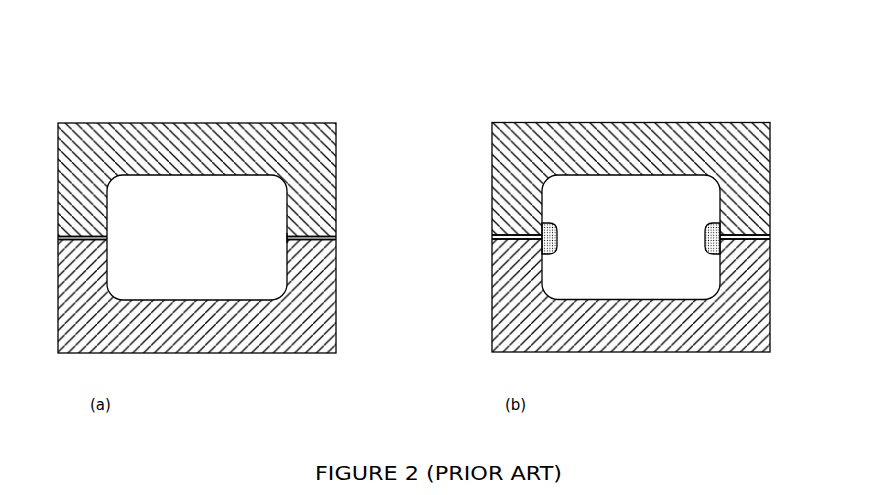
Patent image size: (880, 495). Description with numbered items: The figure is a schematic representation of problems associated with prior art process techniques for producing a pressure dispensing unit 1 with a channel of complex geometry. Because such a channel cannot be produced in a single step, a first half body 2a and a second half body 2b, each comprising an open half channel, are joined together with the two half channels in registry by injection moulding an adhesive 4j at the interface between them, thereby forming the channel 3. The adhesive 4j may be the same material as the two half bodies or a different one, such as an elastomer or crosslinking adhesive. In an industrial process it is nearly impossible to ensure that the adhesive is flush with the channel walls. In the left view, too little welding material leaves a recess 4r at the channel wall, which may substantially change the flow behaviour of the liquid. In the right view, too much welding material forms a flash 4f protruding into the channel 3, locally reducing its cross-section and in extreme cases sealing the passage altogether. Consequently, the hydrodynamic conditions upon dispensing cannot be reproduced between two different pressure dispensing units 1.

The pressure dispensing unit 1 is at (203, 108).
The first half body 2a is at (722, 353).
The second half body 2b is at (270, 123).
The channel 3 is at (211, 245).
The adhesive 4j is at (336, 238).
The recess 4r is at (289, 239).
The flash 4f is at (704, 242).